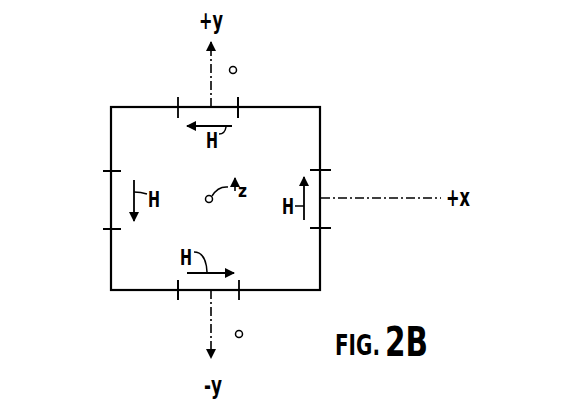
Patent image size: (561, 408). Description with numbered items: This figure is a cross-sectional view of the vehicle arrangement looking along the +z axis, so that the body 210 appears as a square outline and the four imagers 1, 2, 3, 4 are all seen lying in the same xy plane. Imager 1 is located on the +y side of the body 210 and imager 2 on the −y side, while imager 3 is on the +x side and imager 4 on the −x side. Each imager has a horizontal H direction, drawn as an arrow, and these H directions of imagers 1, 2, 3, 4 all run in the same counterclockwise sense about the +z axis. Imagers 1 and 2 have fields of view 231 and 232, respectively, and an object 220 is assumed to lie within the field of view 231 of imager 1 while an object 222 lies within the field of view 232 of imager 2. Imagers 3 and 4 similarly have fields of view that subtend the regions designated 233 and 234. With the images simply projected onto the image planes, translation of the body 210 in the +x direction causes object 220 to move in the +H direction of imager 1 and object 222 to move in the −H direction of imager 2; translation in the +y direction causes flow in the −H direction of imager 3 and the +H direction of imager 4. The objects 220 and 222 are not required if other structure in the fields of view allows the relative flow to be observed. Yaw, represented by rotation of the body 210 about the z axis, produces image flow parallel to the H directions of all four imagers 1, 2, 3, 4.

The body 210 is at (137, 107).
The object 220 is at (236, 67).
The object 222 is at (242, 331).
The imager 1 is at (228, 107).
The imager 2 is at (200, 290).
The imager 3 is at (322, 177).
The imager 4 is at (111, 190).
The field of view 231 is at (191, 68).
The field of view 232 is at (189, 363).
The field of view region 233 is at (429, 184).
The field of view region 234 is at (80, 224).